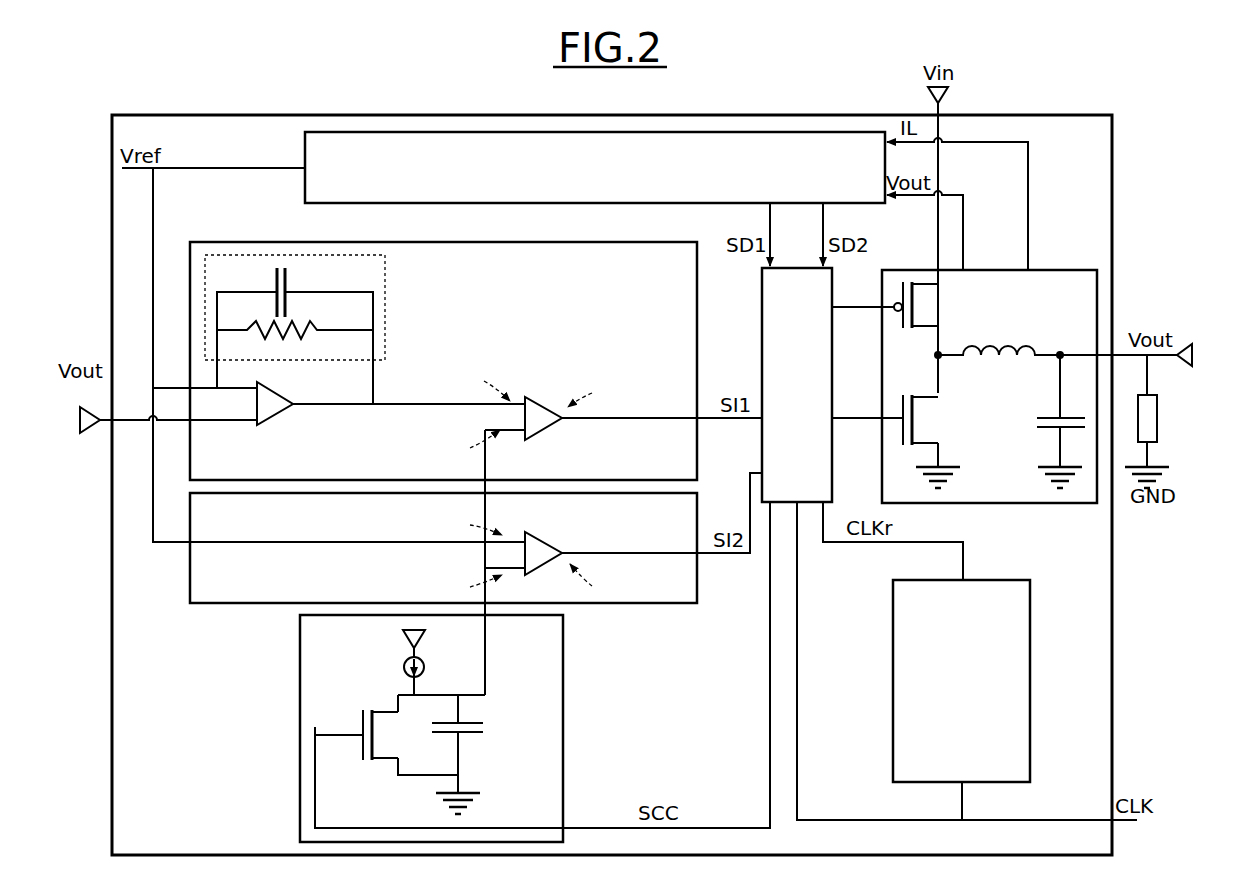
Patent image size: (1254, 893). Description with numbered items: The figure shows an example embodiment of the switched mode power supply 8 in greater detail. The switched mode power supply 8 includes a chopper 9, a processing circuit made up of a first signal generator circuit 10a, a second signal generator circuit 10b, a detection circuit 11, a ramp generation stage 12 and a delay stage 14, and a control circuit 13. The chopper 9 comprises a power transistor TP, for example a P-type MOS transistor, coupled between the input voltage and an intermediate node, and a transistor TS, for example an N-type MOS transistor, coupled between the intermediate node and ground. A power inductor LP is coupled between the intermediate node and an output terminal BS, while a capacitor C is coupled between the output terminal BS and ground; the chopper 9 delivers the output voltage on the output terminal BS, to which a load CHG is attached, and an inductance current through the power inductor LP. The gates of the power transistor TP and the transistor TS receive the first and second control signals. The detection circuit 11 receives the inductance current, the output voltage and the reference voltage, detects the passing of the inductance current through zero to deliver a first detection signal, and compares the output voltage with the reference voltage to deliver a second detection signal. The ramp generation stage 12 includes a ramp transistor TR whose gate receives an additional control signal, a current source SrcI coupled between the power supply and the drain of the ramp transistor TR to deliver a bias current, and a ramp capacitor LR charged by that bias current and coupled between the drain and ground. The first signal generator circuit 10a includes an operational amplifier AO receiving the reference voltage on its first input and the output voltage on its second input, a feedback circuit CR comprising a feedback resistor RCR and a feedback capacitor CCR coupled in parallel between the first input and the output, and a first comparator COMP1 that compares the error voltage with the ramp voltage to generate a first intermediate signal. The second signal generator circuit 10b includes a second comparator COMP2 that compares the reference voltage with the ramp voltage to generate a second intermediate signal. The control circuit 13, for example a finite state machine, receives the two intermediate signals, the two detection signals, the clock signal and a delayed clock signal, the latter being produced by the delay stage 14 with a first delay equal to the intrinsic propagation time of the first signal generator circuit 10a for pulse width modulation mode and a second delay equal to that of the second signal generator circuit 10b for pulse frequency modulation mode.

The switched mode power supply 8 is at (112, 546).
The chopper 9 is at (1095, 268).
The first signal generator circuit 10a is at (232, 240).
The second signal generator circuit 10b is at (222, 605).
The detection circuit 11 is at (587, 178).
The ramp generation stage 12 is at (300, 728).
The control circuit 13 is at (787, 395).
The delay stage 14 is at (1030, 683).
The feedback circuit CR is at (323, 329).
The feedback capacitor CCR is at (292, 285).
The feedback resistor RCR is at (294, 324).
The operational amplifier AO is at (283, 420).
The first comparator COMP1 is at (566, 448).
The second comparator COMP2 is at (547, 543).
The power transistor TP is at (932, 302).
The transistor TS is at (931, 417).
The power inductor LP is at (1008, 334).
The output terminal BS is at (1062, 350).
The capacitor C is at (1046, 417).
The load CHG is at (1158, 418).
The ramp transistor TR is at (354, 710).
The ramp capacitor LR is at (485, 742).
The current source SrcI is at (393, 663).